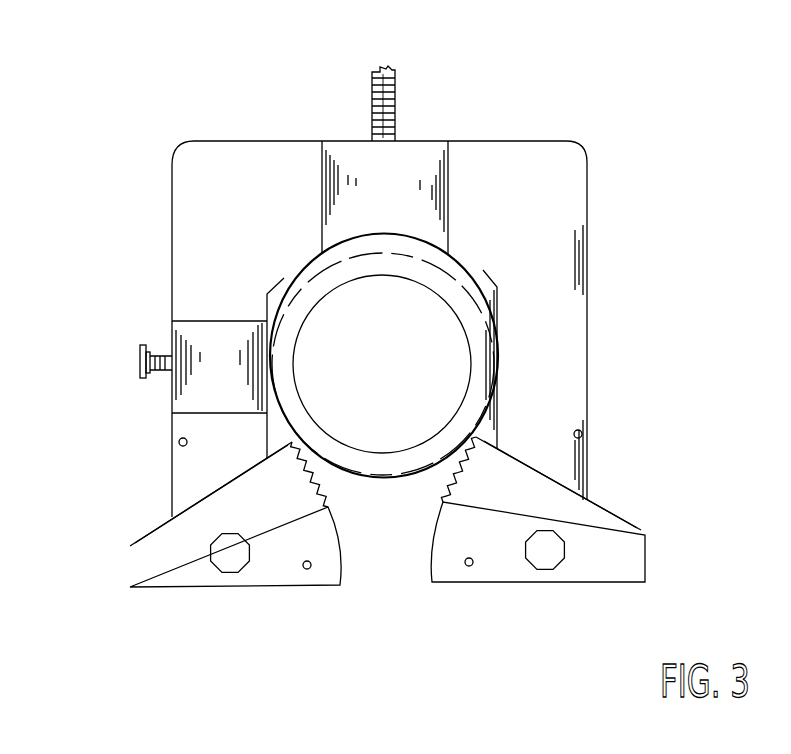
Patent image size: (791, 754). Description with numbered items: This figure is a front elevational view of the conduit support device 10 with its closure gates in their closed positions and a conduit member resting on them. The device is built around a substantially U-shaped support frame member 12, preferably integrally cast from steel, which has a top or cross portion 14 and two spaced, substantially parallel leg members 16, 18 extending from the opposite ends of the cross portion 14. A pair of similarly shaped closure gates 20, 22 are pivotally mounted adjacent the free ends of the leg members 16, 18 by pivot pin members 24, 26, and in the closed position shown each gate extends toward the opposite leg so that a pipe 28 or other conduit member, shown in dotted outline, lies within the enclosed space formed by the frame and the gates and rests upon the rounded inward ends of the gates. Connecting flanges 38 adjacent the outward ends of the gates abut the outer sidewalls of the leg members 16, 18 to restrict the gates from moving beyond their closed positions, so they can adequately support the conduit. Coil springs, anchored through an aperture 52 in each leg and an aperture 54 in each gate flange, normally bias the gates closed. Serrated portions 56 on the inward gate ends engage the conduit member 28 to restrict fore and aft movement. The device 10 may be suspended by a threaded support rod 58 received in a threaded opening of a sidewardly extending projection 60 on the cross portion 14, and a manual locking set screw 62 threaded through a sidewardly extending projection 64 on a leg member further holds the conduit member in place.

The conduit support device 10 is at (368, 322).
The support frame member 12 is at (372, 305).
The cross portion 14 is at (487, 162).
The leg member 16 is at (587, 247).
The leg member 18 is at (172, 318).
The closure gate 20 is at (628, 588).
The closure gate 22 is at (198, 593).
The pivot pin member 24 is at (548, 572).
The pivot pin member 26 is at (232, 574).
The pipe 28 is at (455, 280).
The connecting flange 38 is at (140, 542).
The aperture 52 is at (178, 442).
The aperture 54 is at (312, 565).
The serrated portion 56 is at (444, 503).
The threaded support rod 58 is at (395, 100).
The sidewardly extending projection 60 is at (366, 152).
The manual locking set screw 62 is at (138, 360).
The sidewardly extending projection 64 is at (205, 346).